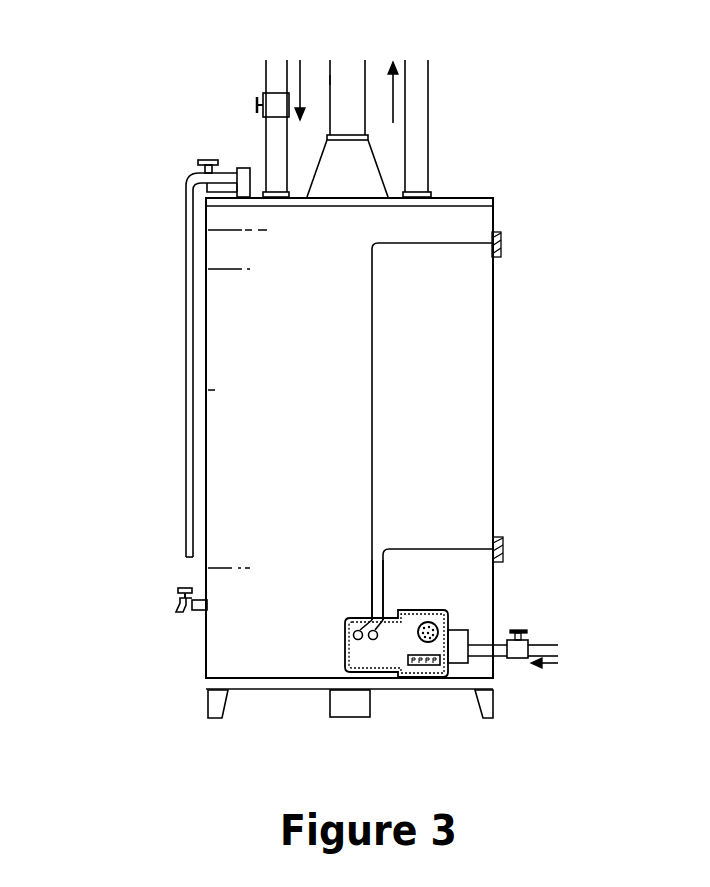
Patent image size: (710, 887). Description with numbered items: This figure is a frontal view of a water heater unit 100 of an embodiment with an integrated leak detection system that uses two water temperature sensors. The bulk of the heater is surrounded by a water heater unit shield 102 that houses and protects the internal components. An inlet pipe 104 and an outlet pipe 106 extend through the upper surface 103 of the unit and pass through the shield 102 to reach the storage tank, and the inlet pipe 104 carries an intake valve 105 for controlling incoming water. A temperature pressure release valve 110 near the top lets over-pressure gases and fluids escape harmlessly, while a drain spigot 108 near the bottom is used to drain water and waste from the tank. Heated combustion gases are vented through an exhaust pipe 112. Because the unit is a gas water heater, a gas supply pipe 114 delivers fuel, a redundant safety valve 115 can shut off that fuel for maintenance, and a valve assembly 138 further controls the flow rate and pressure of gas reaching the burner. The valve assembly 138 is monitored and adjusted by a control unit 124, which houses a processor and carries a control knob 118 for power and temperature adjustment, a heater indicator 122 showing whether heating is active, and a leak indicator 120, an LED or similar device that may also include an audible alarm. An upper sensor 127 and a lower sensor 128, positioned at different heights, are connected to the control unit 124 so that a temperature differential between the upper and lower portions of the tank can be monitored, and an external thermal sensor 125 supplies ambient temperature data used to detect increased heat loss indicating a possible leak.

The water heater unit 100 is at (550, 116).
The water heater unit shield 102 is at (493, 443).
The upper surface 103 is at (455, 196).
The inlet pipe 104 is at (266, 133).
The intake valve 105 is at (256, 100).
The outlet pipe 106 is at (429, 128).
The drain spigot 108 is at (180, 590).
The temperature pressure release valve 110 is at (180, 186).
The exhaust pipe 112 is at (329, 78).
The gas supply pipe 114 is at (538, 645).
The redundant safety valve 115 is at (520, 632).
The control knob 118 is at (430, 622).
The leak indicator 120 is at (345, 614).
The heater indicator 122 is at (371, 618).
The control unit 124 is at (345, 647).
The external thermal sensor 125 is at (425, 665).
The upper sensor 127 is at (502, 240).
The lower sensor 128 is at (503, 547).
The valve assembly 138 is at (462, 664).